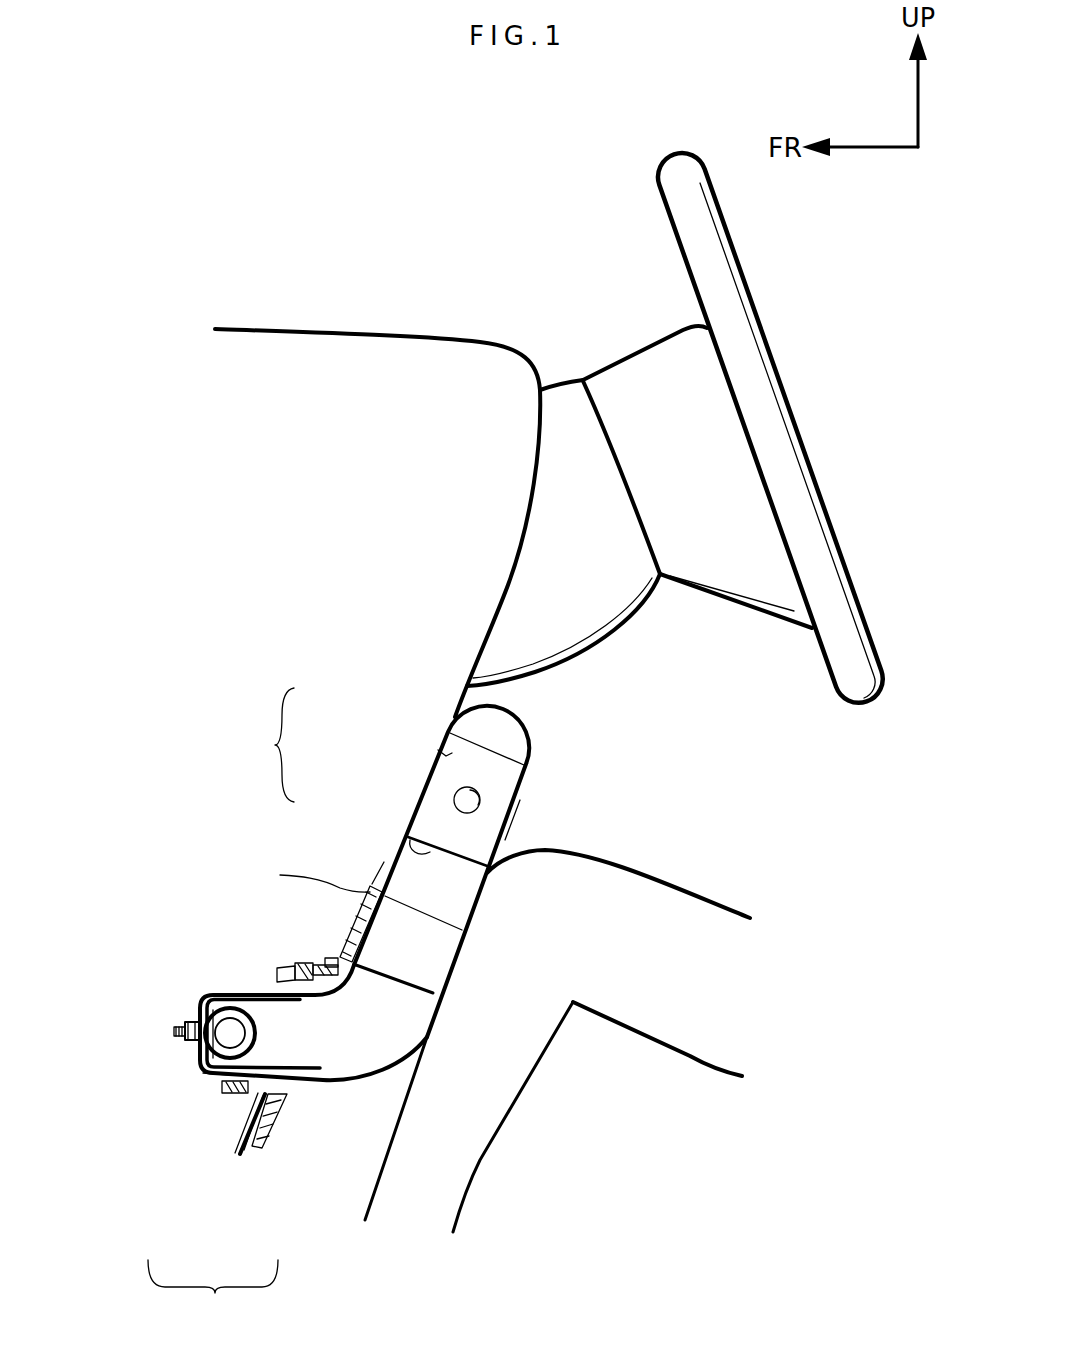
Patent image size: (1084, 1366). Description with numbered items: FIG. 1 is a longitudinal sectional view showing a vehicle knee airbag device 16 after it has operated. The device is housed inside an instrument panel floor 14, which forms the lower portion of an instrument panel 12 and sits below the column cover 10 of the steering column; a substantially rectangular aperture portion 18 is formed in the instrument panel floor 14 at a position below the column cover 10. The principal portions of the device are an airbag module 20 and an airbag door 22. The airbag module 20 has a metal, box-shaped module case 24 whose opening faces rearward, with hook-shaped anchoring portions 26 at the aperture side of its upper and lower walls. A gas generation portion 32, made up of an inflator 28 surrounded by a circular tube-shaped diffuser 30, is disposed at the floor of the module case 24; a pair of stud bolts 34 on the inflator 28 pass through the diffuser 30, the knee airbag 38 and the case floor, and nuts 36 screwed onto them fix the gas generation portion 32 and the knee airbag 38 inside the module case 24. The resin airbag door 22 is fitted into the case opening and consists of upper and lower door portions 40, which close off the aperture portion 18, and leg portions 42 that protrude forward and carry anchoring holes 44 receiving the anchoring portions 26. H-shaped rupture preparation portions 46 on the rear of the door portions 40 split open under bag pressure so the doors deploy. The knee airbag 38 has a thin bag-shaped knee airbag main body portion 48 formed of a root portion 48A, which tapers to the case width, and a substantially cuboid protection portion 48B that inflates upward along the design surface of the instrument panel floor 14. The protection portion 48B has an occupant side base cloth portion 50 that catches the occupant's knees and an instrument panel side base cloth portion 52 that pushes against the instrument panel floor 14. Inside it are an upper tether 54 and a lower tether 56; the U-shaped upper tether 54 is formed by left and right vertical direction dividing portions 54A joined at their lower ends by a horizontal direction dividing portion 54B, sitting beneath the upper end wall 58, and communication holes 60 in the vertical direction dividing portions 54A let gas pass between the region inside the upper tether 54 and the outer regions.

The column cover 10 is at (557, 368).
The instrument panel 12 is at (304, 320).
The instrument panel floor 14 is at (262, 1157).
The vehicle knee airbag device 16 is at (213, 1293).
The aperture portion 18 is at (428, 1033).
The airbag module 20 is at (190, 1088).
The airbag door 22 is at (247, 1175).
The module case 24 is at (195, 1057).
The anchoring portions 26 is at (300, 962).
The inflator 28 is at (203, 998).
The diffuser 30 is at (222, 1006).
The gas generation portion 32 is at (266, 1043).
The stud bolts 34 is at (172, 1030).
The nuts 36 is at (192, 1043).
The knee airbag 38 is at (538, 742).
The door portions 40 is at (360, 927).
The leg portions 42 is at (275, 970).
The anchoring holes 44 is at (303, 966).
The rupture preparation portions 46 is at (462, 932).
The knee airbag main body portion 48 is at (536, 871).
The root portion 48A is at (340, 1090).
The protection portion 48B is at (502, 847).
The occupant side base cloth portion 50 is at (510, 827).
The instrument panel side base cloth portion 52 is at (387, 858).
The upper tether 54 is at (263, 745).
The vertical direction dividing portions 54A is at (452, 753).
The horizontal direction dividing portion 54B is at (403, 837).
The lower tether 56 is at (403, 980).
The upper end wall 58 is at (513, 715).
The communication holes 60 is at (481, 803).